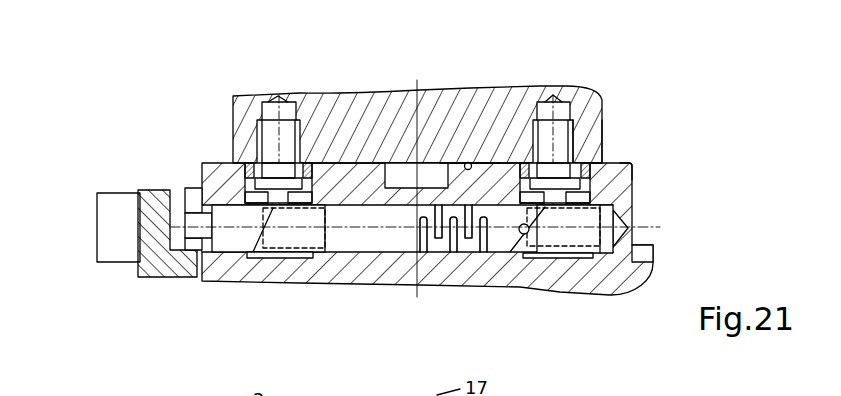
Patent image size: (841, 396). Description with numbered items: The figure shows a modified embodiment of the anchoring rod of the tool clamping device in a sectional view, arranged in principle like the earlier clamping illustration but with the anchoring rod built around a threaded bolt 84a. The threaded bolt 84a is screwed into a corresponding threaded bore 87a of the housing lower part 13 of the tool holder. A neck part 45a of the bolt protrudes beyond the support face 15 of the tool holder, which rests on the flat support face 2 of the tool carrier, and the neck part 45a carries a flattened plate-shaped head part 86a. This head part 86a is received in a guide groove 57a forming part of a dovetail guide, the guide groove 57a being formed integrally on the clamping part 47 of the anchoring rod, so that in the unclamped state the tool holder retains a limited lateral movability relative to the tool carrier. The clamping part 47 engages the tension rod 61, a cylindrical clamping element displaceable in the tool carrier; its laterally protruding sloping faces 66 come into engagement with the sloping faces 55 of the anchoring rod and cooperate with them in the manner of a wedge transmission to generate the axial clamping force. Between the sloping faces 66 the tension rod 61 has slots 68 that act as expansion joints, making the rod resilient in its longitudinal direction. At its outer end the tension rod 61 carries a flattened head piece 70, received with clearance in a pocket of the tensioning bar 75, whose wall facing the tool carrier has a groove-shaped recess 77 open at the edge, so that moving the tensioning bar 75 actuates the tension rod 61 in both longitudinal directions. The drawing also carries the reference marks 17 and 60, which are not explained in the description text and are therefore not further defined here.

The support face 2 is at (462, 178).
The housing lower part 13 is at (527, 106).
The support face 15 is at (383, 162).
The parting plane 17 is at (432, 175).
The neck part 45a is at (632, 166).
The clamping part 47 is at (287, 237).
The sloping faces 55 is at (523, 235).
The guide groove 57a is at (243, 178).
The actuating device 60 is at (131, 227).
The tension rod 61 is at (357, 240).
The sloping faces 66 is at (257, 210).
The slots 68 is at (443, 248).
The head piece 70 is at (140, 277).
The tensioning bar 75 is at (173, 260).
The groove-shaped recess 77 is at (190, 196).
The threaded bolt 84a is at (288, 137).
The head part 86a is at (588, 192).
The threaded bore 87a is at (578, 153).